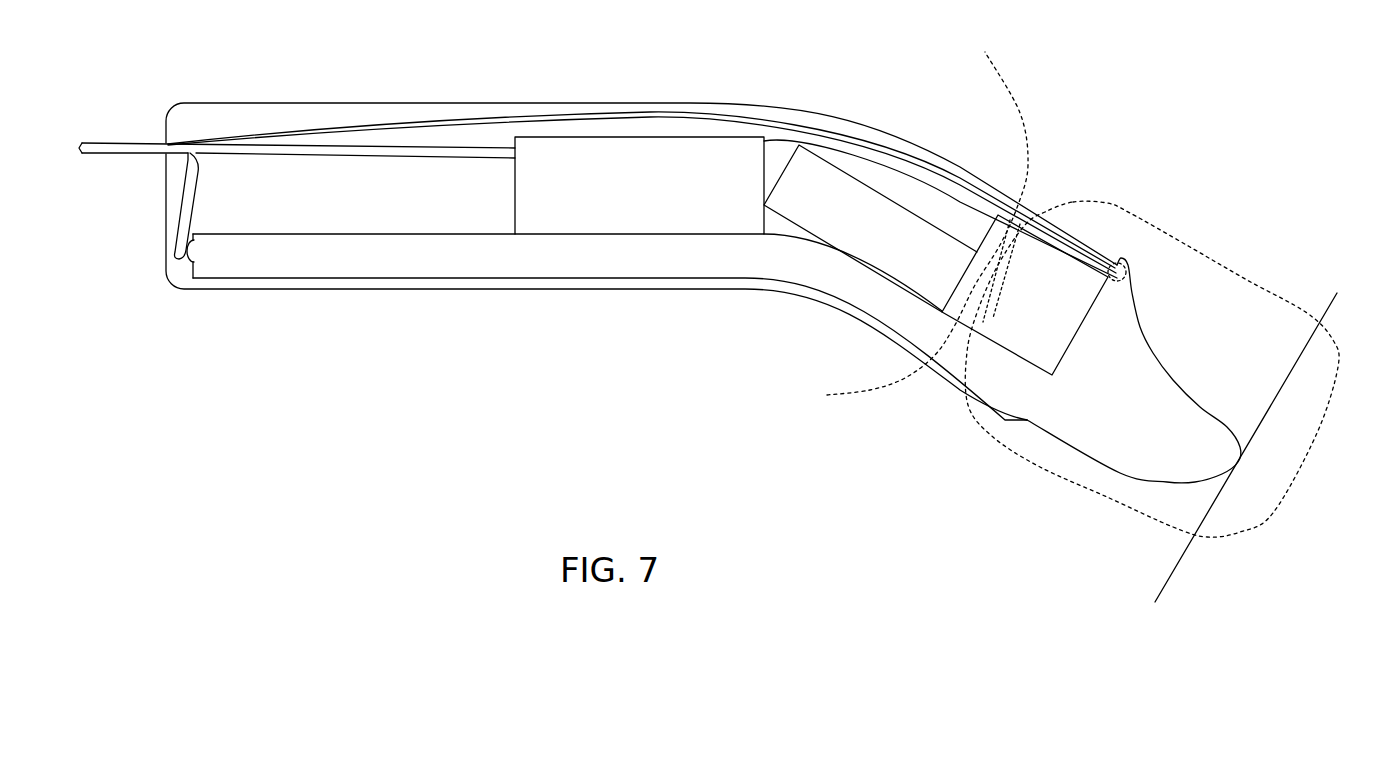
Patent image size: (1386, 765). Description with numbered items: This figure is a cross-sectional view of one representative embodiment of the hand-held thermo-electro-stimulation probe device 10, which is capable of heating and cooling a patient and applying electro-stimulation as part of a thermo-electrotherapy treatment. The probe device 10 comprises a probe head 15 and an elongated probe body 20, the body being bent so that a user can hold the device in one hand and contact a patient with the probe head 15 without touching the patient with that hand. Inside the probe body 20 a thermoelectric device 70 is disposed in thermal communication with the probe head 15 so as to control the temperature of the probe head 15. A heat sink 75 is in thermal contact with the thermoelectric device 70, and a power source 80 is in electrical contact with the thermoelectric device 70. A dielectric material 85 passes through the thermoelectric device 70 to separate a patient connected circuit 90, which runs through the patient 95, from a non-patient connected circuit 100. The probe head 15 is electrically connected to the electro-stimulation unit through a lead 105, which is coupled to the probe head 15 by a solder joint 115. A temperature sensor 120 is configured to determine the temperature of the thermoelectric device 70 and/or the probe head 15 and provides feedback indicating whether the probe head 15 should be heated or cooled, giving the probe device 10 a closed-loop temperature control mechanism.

The thermo-electro-stimulation probe device 10 is at (855, 42).
The probe head 15 is at (1145, 423).
The probe body 20 is at (466, 74).
The thermoelectric device 70 is at (1055, 325).
The heat sink 75 is at (886, 239).
The power source 80 is at (652, 198).
The dielectric material 85 is at (1002, 330).
The patient connected circuit 90 is at (1194, 247).
The patient 95 is at (1311, 589).
The non-patient connected circuit 100 is at (1017, 109).
The lead 105 is at (196, 198).
The solder joint 115 is at (187, 264).
The temperature sensor 120 is at (1117, 263).